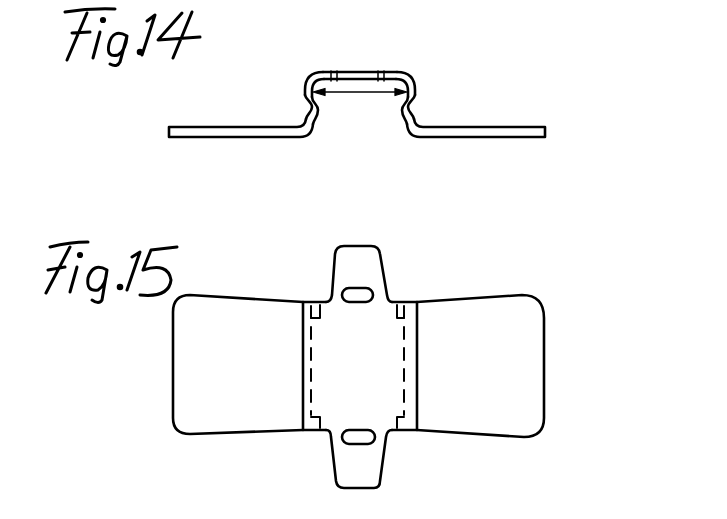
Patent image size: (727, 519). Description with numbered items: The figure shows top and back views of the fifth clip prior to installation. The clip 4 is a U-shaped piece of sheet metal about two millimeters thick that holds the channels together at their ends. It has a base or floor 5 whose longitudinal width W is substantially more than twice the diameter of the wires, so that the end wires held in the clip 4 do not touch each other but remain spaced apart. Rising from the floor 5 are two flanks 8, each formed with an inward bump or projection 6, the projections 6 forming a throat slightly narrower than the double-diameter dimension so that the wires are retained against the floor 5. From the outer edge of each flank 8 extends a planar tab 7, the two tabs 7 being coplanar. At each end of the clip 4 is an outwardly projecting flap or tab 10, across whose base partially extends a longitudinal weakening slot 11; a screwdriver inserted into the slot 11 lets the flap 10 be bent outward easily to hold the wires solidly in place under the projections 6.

In FIG. 14, the sheet metal clip 4 is at (354, 104).
In FIG. 15, the sheet metal clip 4 is at (345, 350).
In FIG. 14, the base 5 is at (365, 78).
In FIG. 14, the inward bumps or projections 6 is at (321, 113).
In FIG. 15, the inward bumps or projections 6 is at (420, 315).
In FIG. 14, the planar tab 7 is at (207, 134).
In FIG. 15, the planar tab 7 is at (215, 328).
In FIG. 14, the flank 8 is at (303, 93).
In FIG. 14, the width of the floor W is at (387, 77).
In FIG. 15, the outwardly projecting flap or tab 10 is at (363, 267).
In FIG. 15, the longitudinal weakening slot 11 is at (355, 298).